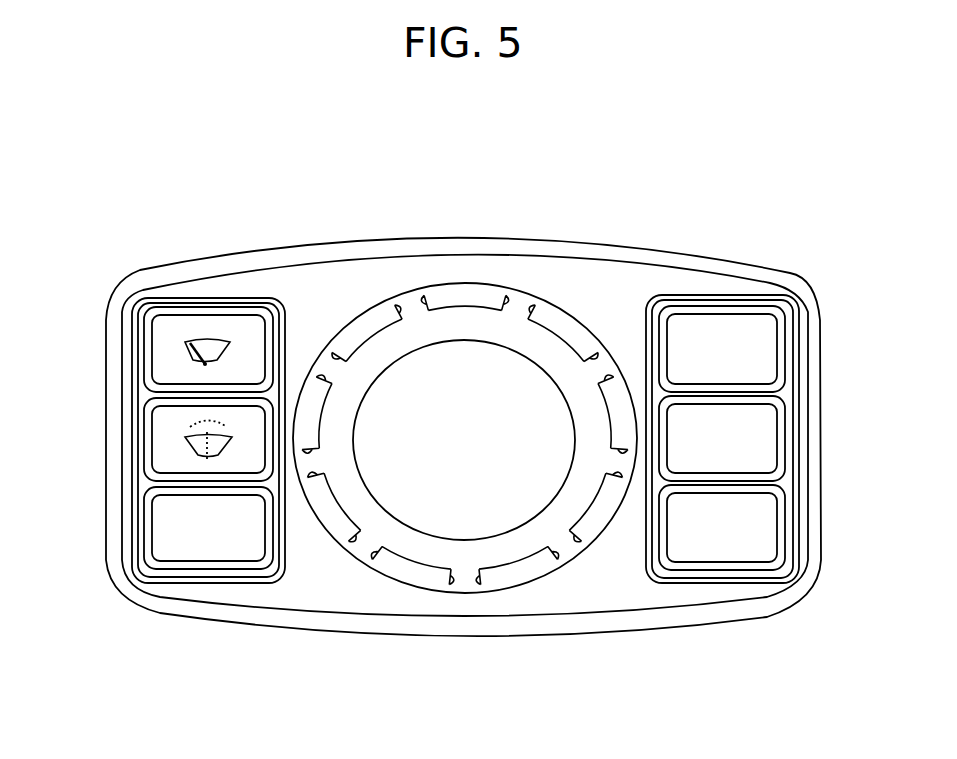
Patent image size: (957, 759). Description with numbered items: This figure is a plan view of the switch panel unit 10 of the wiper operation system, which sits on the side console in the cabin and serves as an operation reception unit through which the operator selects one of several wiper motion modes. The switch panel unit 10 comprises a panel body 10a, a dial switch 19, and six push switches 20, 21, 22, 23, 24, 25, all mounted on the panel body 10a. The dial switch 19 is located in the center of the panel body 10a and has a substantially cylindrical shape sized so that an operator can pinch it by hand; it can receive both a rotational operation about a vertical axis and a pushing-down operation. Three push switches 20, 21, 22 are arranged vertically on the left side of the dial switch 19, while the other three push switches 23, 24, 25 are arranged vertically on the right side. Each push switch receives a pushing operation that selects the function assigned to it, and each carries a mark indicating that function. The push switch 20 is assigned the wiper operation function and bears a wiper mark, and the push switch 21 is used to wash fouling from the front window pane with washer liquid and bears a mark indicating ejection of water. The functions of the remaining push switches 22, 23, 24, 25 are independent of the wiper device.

The switch panel unit 10 is at (326, 220).
The panel body 10a is at (612, 247).
The dial switch 19 is at (428, 550).
The push switch 20 is at (167, 332).
The push switch 21 is at (160, 442).
The push switch 22 is at (170, 530).
The push switch 23 is at (767, 345).
The push switch 24 is at (760, 437).
The push switch 25 is at (758, 528).